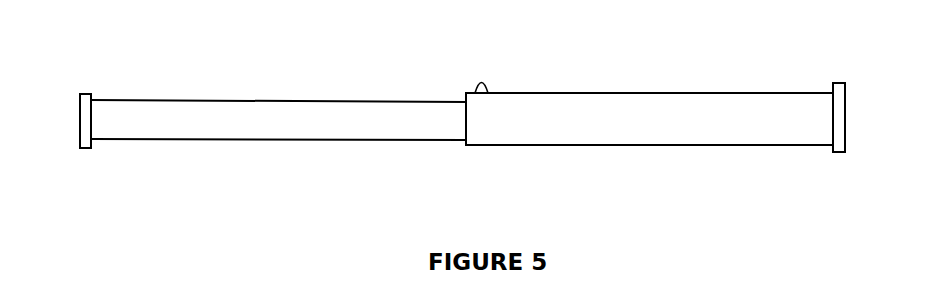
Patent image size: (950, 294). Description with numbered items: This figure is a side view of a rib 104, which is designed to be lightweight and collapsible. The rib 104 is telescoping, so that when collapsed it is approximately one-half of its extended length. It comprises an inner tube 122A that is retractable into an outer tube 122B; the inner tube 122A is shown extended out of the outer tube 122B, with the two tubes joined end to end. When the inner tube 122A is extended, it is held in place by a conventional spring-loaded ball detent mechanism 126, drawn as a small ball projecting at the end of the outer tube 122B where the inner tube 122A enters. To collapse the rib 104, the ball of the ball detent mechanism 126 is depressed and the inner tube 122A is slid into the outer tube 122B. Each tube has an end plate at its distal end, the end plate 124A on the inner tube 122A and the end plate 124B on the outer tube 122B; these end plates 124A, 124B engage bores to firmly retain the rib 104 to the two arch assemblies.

The rib 104 is at (463, 131).
The inner tube 122A is at (272, 92).
The outer tube 122B is at (683, 72).
The end plate 124A is at (66, 124).
The end plate 124B is at (856, 115).
The spring-loaded ball detent mechanism 126 is at (485, 75).